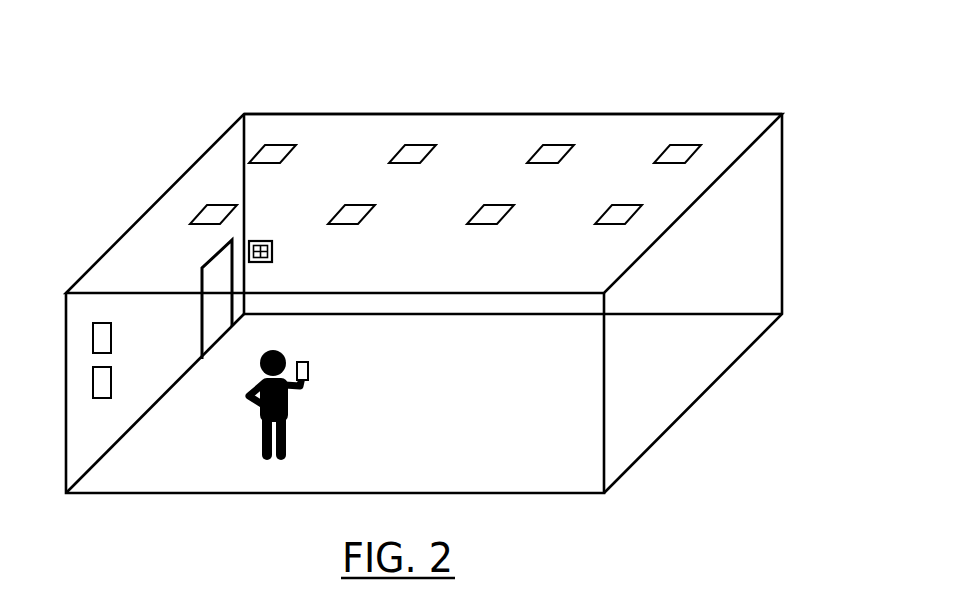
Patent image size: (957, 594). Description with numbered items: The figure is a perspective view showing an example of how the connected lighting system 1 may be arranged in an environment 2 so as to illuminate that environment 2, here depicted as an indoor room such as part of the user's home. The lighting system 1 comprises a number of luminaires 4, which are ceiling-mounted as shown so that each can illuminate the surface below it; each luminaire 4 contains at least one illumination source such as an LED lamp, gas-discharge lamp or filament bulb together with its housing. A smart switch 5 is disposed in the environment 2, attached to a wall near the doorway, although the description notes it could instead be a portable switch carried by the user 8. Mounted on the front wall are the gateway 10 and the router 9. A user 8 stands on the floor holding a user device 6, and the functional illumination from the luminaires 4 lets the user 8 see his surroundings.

The lighting system 1 is at (762, 84).
The environment 2 is at (643, 113).
The luminaire 4 is at (490, 208).
The smart switch 5 is at (272, 240).
The user device 6 is at (309, 364).
The user 8 is at (252, 396).
The router 9 is at (112, 377).
The gateway 10 is at (112, 331).